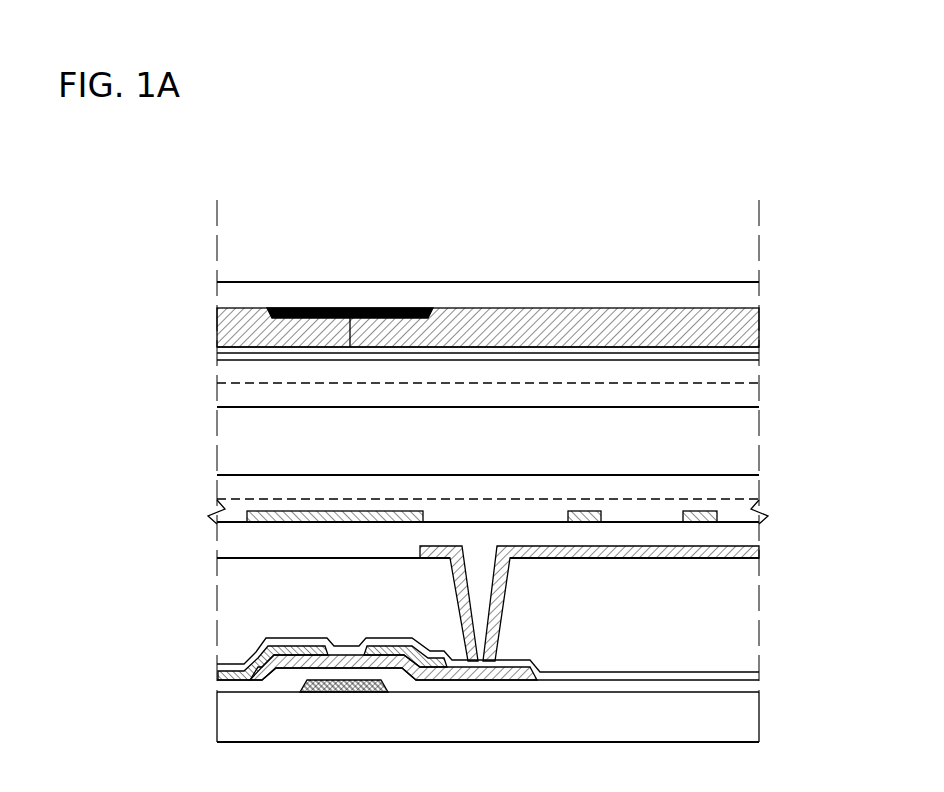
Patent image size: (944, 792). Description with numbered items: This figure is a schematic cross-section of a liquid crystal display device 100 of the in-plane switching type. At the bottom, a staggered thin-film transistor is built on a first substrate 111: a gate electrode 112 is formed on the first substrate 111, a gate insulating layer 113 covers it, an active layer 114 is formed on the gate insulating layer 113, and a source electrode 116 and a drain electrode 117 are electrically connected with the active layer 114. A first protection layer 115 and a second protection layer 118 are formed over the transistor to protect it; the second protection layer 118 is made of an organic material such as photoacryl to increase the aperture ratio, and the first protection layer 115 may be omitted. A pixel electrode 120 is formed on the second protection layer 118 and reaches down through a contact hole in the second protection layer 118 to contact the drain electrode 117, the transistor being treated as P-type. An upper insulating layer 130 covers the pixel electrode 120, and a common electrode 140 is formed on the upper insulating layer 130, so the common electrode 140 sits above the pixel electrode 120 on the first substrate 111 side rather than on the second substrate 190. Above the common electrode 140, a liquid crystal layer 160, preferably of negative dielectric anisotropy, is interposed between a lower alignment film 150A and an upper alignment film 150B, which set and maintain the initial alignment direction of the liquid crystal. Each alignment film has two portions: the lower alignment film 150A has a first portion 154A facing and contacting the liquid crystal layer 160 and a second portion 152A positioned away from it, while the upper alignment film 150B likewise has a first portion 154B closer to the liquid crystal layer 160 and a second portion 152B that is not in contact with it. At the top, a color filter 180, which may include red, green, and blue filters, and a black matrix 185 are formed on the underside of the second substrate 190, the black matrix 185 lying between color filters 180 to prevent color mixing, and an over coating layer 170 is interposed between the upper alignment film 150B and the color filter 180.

The liquid crystal display device 100 is at (770, 166).
The first substrate 111 is at (235, 719).
The gate electrode 112 is at (327, 683).
The gate insulating layer 113 is at (230, 685).
The active layer 114 is at (353, 677).
The first protection layer 115 is at (230, 664).
The source electrode 116 is at (277, 652).
The drain electrode 117 is at (443, 670).
The second protection layer 118 is at (225, 596).
The pixel electrode 120 is at (422, 556).
The upper insulating layer 130 is at (225, 536).
The common electrode 140 is at (247, 512).
The lower alignment film 150A is at (129, 458).
The second portion of the lower alignment film 152A is at (232, 500).
The first portion of the lower alignment film 154A is at (241, 482).
The upper alignment film 150B is at (134, 370).
The second portion of the upper alignment film 152B is at (230, 374).
The first portion of the upper alignment film 154B is at (230, 396).
The liquid crystal layer 160 is at (230, 425).
The over coating layer 170 is at (230, 350).
The color filter 180 is at (297, 328).
The black matrix 185 is at (267, 308).
The second substrate 190 is at (232, 291).